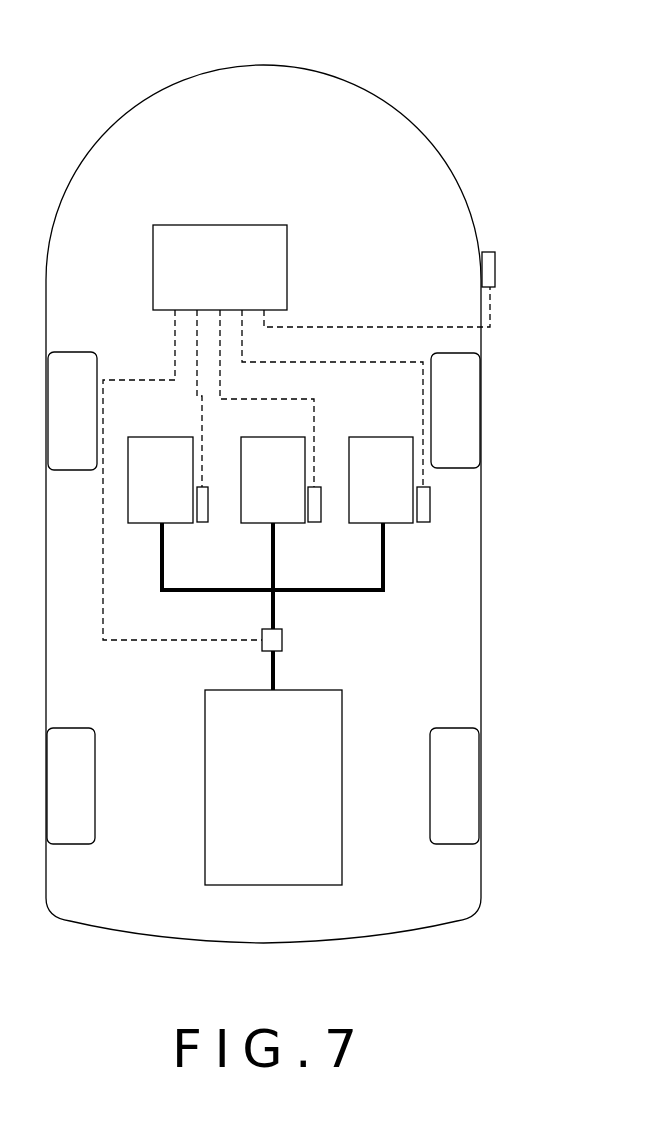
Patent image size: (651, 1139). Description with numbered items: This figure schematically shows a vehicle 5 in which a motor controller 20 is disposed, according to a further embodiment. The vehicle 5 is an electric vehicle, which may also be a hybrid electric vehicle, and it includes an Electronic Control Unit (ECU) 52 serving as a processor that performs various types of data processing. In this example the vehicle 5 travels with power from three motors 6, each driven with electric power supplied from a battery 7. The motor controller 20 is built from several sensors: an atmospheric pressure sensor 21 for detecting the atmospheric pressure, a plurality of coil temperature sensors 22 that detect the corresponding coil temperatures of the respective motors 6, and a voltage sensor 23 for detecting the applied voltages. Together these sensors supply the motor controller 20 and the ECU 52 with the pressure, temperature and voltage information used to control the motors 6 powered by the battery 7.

The vehicle 5 is at (418, 88).
The motor controller 20 is at (296, 387).
The Electronic Control Unit (ECU) 52 is at (287, 265).
The atmospheric pressure sensor 21 is at (495, 265).
The motors 6 is at (147, 524).
The coil temperature sensors 22 is at (203, 524).
The voltage sensor 23 is at (282, 641).
The battery 7 is at (342, 787).